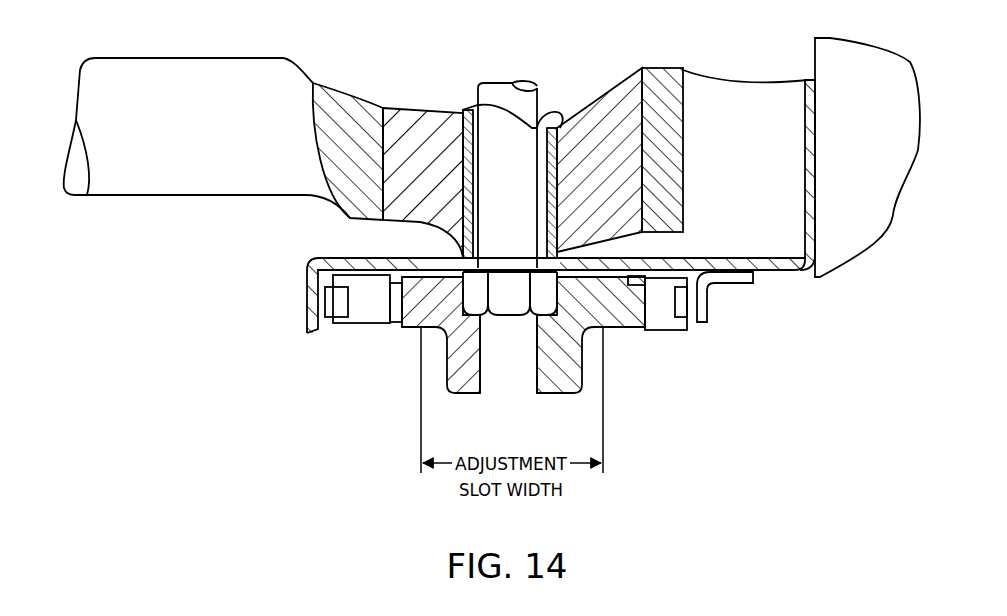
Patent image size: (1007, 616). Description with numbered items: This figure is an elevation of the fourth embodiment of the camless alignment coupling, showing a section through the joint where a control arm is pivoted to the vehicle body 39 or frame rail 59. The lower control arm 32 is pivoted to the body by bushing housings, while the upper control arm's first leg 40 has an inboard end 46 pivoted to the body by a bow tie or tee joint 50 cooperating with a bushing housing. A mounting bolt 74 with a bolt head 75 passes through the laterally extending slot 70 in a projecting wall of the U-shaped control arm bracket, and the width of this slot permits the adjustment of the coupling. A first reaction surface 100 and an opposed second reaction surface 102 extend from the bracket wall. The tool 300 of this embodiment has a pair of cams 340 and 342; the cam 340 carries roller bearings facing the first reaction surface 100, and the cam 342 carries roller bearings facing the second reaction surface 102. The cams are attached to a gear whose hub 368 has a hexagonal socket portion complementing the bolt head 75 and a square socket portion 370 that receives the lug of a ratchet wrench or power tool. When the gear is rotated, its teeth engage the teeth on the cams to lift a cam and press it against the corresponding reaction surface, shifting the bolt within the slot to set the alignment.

The lower control arm 32 is at (436, 158).
The first leg 40 is at (222, 182).
The inboard end 46 is at (668, 130).
The tee joint 50 is at (668, 193).
The laterally extending slot 70 is at (585, 263).
The mounting bolt 74 is at (527, 160).
The bolt head 75 is at (545, 287).
The first reaction surface 100 is at (323, 333).
The second reaction surface 102 is at (693, 312).
The tool 300 is at (443, 372).
The cam 340 is at (368, 308).
The cam 342 is at (663, 308).
The hub 368 is at (490, 318).
The square socket portion 370 is at (512, 385).
The vehicle body 39 is at (863, 138).
The support member 59 is at (863, 65).